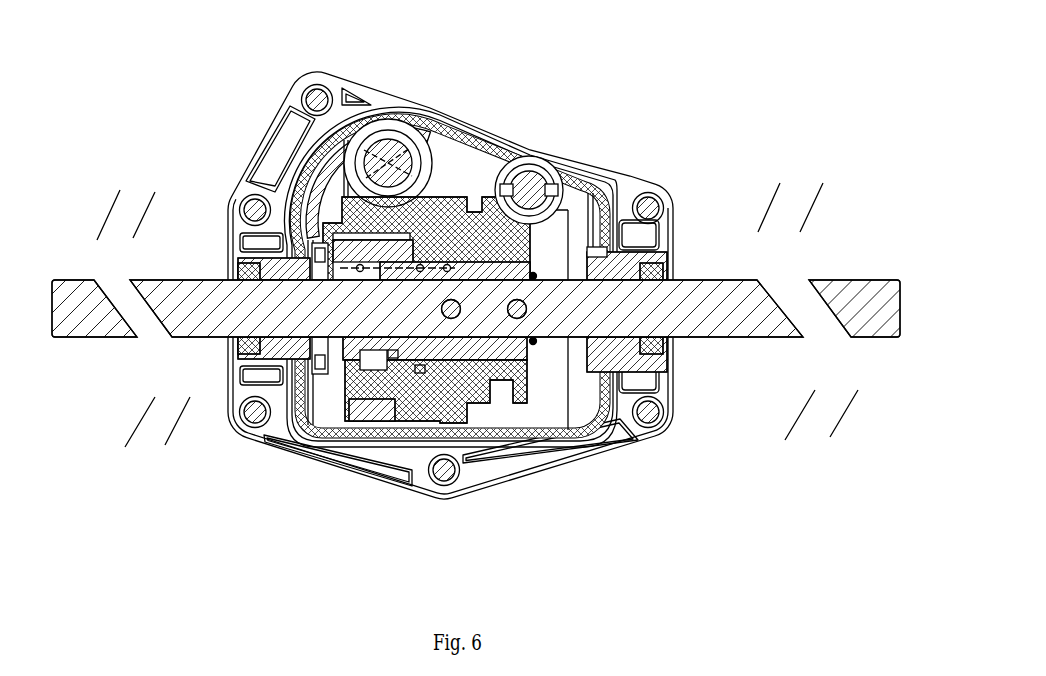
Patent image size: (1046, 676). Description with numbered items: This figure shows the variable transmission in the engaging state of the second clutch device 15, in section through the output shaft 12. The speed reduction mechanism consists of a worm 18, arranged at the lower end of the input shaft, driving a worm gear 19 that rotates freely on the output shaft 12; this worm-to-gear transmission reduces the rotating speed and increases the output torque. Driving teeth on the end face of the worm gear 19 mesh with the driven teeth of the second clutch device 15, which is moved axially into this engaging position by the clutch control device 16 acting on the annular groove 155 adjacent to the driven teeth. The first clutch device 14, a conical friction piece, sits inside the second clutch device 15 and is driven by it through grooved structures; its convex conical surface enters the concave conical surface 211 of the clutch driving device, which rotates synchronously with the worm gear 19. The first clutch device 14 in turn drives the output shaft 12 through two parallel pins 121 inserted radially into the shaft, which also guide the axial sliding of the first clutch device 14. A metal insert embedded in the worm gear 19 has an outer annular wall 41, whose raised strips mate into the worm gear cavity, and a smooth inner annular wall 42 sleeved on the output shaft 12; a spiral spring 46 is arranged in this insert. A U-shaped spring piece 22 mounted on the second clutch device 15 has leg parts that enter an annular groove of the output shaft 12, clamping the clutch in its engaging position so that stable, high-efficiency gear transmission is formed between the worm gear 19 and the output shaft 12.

The output shaft 12 is at (683, 325).
The pins 121 is at (657, 417).
The first clutch device 14 is at (430, 253).
The second clutch device 15 is at (585, 447).
The annular groove 155 is at (500, 393).
The clutch control device 16 is at (524, 262).
The worm 18 is at (387, 164).
The worm gear 19 is at (400, 400).
The concave conical surface 211 is at (446, 474).
The U-shaped spring piece 22 is at (533, 283).
The outer annular wall 41 is at (393, 355).
The inner annular wall 42 is at (420, 370).
The spiral spring 46 is at (265, 260).